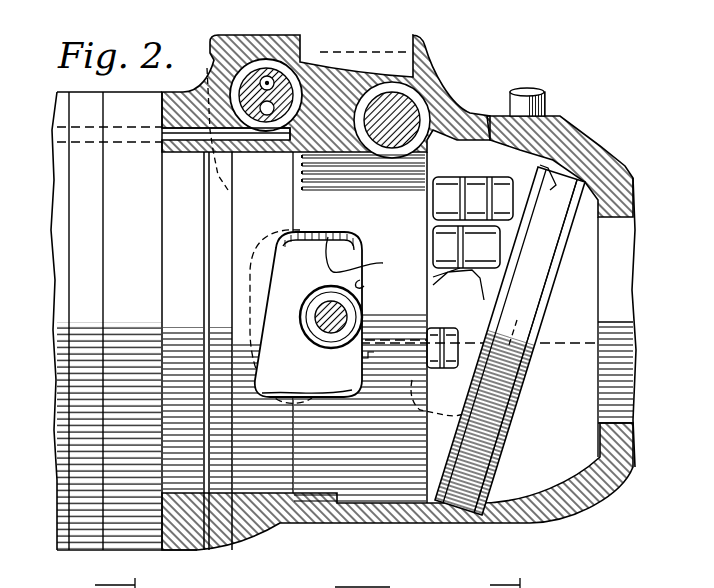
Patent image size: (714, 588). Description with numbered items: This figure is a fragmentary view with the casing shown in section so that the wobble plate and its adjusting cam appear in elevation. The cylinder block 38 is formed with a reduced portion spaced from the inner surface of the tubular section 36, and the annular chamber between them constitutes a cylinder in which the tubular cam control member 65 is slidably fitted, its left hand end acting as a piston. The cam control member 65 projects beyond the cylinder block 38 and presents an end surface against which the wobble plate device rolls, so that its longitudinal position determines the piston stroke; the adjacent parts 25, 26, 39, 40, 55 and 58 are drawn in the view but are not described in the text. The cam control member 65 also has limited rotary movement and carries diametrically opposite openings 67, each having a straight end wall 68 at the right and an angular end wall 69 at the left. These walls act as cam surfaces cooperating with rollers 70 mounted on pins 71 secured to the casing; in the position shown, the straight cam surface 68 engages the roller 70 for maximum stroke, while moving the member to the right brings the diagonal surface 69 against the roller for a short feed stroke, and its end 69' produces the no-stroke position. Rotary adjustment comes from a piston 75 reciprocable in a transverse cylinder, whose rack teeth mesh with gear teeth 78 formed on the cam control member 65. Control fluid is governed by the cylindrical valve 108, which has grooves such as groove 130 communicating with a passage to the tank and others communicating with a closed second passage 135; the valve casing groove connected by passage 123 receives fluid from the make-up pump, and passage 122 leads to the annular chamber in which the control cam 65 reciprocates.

The valve 108 is at (284, 64).
The groove 130 is at (207, 68).
The passage 123 is at (176, 115).
The second passage 135 is at (268, 92).
The passage 122 is at (215, 186).
The piston 75 is at (428, 100).
The swash plate 26 is at (565, 172).
The gear teeth 78 is at (397, 176).
The piston 25 is at (435, 233).
The openings 67 is at (365, 255).
The straight end wall 68 is at (366, 285).
The rollers 70 is at (352, 323).
The pins 71 is at (327, 308).
The angular end wall 69 is at (301, 314).
The end of cam surface 69' is at (284, 317).
The pivot axis 55 is at (520, 324).
The plate face 58 is at (515, 413).
The cylinder block 38 is at (170, 266).
The cylinder 40 is at (92, 535).
The cylinder 39 is at (127, 535).
The tubular section 36 is at (233, 518).
The tubular cam control member 65 is at (393, 475).